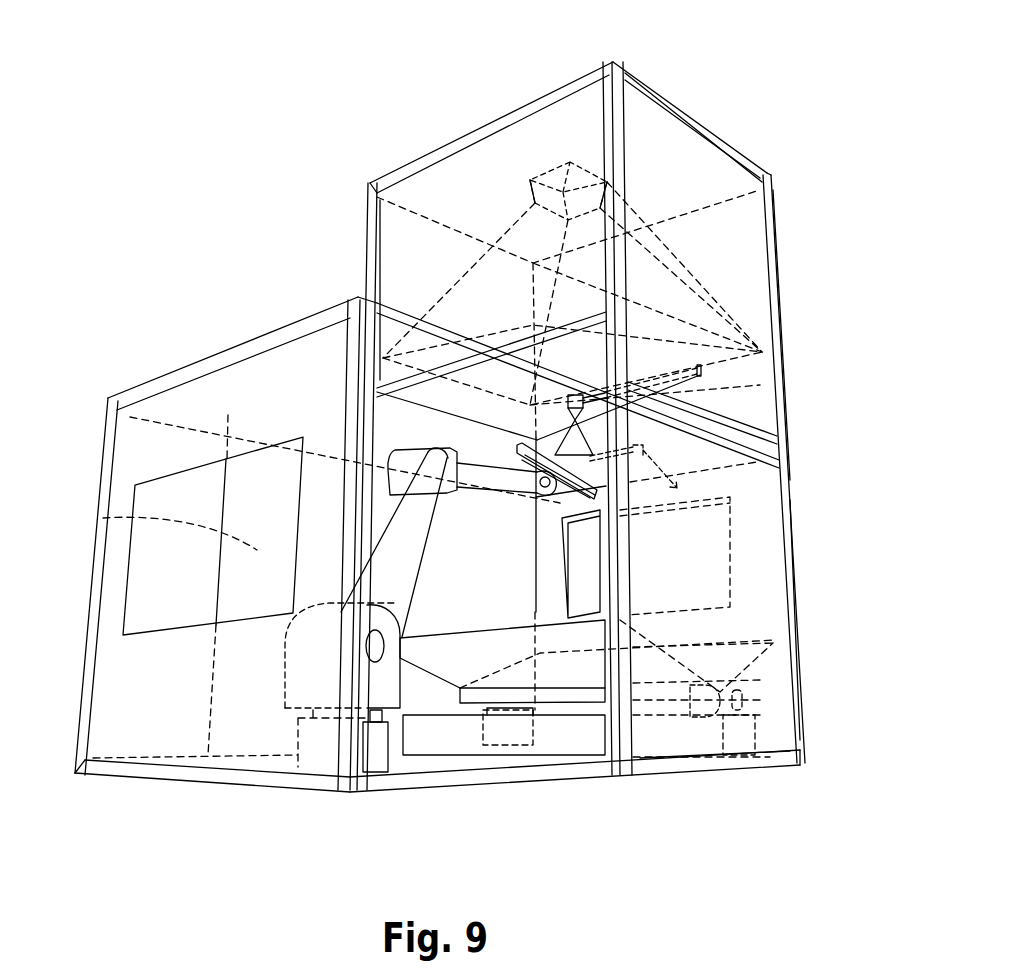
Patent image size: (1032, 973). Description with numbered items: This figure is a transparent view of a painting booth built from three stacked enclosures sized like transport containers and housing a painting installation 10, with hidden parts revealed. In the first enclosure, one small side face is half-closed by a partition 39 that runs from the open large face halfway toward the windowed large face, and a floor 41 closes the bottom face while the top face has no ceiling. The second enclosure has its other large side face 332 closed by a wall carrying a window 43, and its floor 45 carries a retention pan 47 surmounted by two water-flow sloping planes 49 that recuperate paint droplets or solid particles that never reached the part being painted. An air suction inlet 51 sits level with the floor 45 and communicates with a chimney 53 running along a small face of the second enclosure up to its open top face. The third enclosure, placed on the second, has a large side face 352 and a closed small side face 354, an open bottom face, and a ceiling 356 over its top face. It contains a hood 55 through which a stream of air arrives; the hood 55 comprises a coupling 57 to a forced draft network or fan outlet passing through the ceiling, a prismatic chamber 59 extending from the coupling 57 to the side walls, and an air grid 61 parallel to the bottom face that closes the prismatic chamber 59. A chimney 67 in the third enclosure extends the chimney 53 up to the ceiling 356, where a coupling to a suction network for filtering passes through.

The painting installation 10 is at (844, 360).
The partition 39 is at (103, 520).
The floor 41 is at (262, 755).
The window 43 is at (705, 562).
The floor 45 is at (777, 756).
The retention pan 47 is at (575, 740).
The water-flow sloping planes 49 is at (730, 665).
The air suction inlet 51 is at (483, 728).
The chimney 53 is at (500, 573).
The hood 55 is at (684, 252).
The coupling 57 is at (545, 188).
The prismatic chamber 59 is at (518, 220).
The air grid 61 is at (678, 372).
The chimney 67 is at (490, 285).
The large side face 332 is at (760, 613).
The large side face 352 is at (737, 253).
The small side face 354 is at (393, 250).
The ceiling 356 is at (704, 170).